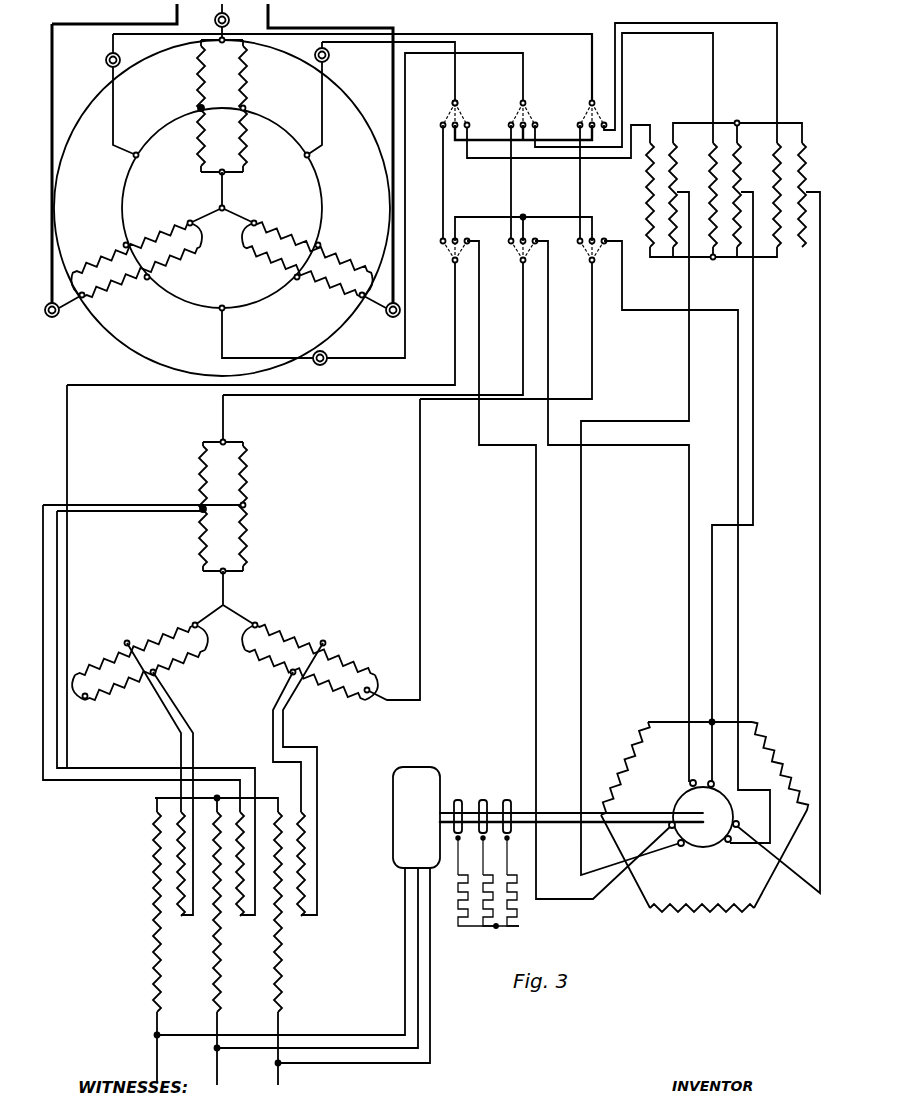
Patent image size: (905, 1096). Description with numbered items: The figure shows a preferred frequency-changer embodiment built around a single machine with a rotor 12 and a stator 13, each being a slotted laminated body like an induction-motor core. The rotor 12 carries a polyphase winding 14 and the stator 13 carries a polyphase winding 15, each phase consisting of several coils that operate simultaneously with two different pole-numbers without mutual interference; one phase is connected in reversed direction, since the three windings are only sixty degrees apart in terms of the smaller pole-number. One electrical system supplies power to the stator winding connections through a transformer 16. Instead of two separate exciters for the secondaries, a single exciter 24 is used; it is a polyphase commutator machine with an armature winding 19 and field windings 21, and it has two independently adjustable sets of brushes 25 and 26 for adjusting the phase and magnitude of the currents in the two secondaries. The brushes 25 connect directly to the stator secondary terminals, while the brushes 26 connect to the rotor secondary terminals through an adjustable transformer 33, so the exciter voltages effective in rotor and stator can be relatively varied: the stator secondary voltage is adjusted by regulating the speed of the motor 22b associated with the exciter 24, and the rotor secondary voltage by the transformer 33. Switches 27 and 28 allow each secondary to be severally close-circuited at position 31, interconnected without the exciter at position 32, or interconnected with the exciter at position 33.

The rotor 12 is at (343, 92).
The stator 13 is at (340, 549).
The rotor polyphase winding 14 is at (274, 120).
The stator polyphase winding 15 is at (200, 576).
The transformer 16 is at (291, 943).
The armature winding 19 is at (679, 802).
The field windings 21 is at (622, 755).
The motor 22b is at (548, 847).
The exciter 24 is at (677, 719).
The brushes 25 is at (693, 783).
The brushes 26 is at (711, 785).
The switch 27 is at (500, 133).
The switch 28 is at (505, 268).
The close-circuited switch position 31 is at (445, 132).
The interconnected-without-exciter switch position 32 is at (450, 110).
The adjustable transformer 33 is at (461, 110).